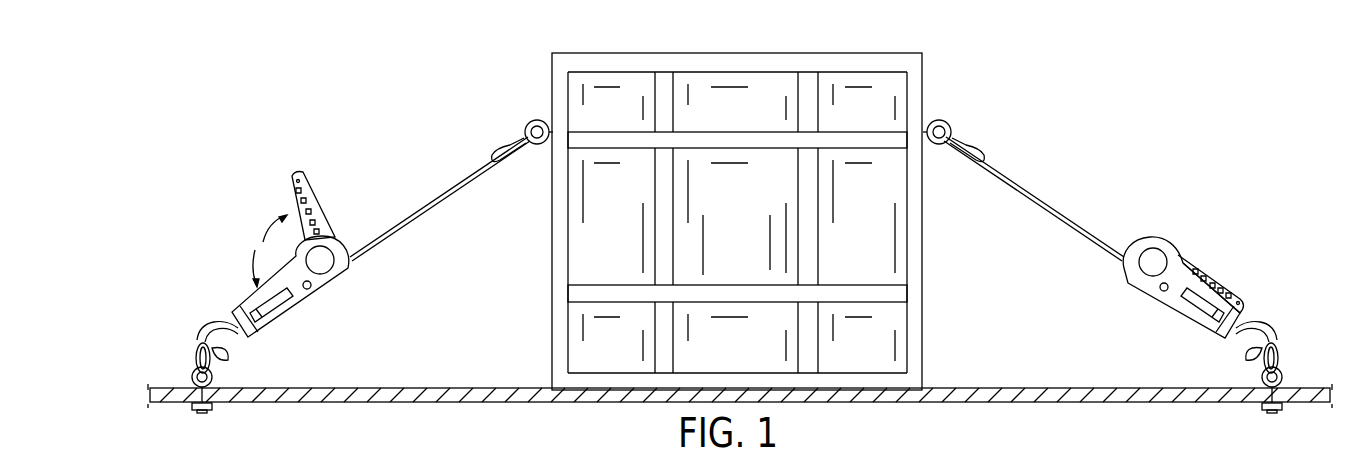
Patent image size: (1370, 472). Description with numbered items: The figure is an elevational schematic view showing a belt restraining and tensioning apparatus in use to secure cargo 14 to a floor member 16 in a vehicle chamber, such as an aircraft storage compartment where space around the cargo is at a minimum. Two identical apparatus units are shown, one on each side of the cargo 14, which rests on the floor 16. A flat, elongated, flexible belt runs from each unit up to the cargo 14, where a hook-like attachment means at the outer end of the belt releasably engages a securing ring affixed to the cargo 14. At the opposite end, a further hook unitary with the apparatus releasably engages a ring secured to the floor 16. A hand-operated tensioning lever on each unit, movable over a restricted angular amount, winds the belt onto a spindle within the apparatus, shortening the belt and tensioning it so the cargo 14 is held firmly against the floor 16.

The cargo 14 is at (720, 211).
The floor member 16 is at (442, 387).